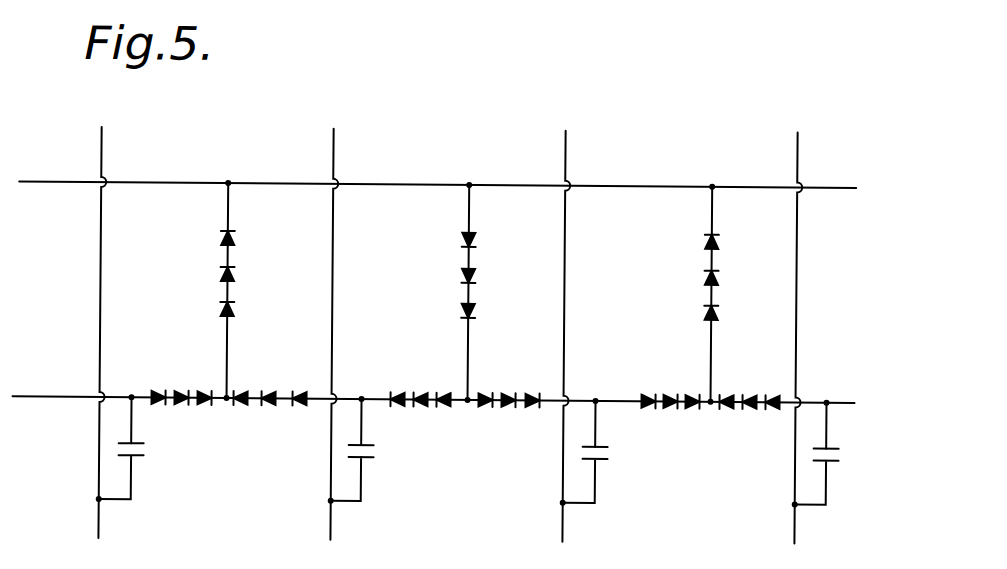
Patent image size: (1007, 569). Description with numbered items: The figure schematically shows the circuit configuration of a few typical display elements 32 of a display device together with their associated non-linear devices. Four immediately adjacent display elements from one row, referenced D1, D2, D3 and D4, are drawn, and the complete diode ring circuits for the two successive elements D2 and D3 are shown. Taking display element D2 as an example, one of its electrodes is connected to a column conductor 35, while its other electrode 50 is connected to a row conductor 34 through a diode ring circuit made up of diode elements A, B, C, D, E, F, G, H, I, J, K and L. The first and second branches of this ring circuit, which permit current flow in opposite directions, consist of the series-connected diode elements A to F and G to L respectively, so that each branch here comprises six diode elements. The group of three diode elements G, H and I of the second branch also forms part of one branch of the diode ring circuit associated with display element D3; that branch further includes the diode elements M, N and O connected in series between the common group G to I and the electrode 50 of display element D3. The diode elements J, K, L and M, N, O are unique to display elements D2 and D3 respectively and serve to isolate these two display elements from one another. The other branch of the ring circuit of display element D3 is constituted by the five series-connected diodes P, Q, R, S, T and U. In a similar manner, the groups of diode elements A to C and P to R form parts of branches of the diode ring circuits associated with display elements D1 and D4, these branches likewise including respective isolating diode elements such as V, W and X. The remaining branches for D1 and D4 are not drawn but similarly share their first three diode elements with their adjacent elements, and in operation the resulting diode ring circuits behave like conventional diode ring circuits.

The row conductor 34 is at (415, 184).
The column conductor 35 is at (100, 153).
The electrode 50 is at (142, 446).
The display element 32 is at (494, 451).
The display element D1 is at (146, 469).
The display element D2 is at (374, 470).
The display element D3 is at (610, 470).
The display element D4 is at (838, 470).
The diode element A is at (237, 239).
The diode element B is at (236, 275).
The diode element C is at (236, 310).
The diode element D is at (241, 384).
The diode element E is at (269, 384).
The diode element F is at (300, 385).
The diode element G is at (479, 241).
The diode element H is at (478, 277).
The diode element I is at (476, 312).
The diode element J is at (443, 386).
The diode element K is at (422, 385).
The diode element L is at (397, 385).
The diode element M is at (487, 386).
The diode element N is at (509, 386).
The diode element O is at (534, 386).
The diode element P is at (721, 243).
The diode element Q is at (720, 279).
The diode element R is at (720, 314).
The diode element S is at (692, 387).
The diode element T is at (671, 386).
The diode element U is at (648, 386).
The diode element V is at (729, 387).
The diode element W is at (753, 387).
The diode element X is at (776, 387).